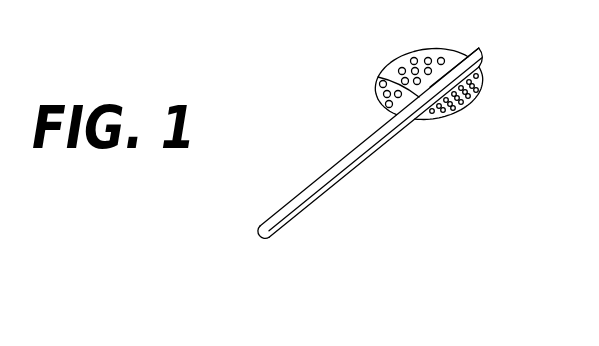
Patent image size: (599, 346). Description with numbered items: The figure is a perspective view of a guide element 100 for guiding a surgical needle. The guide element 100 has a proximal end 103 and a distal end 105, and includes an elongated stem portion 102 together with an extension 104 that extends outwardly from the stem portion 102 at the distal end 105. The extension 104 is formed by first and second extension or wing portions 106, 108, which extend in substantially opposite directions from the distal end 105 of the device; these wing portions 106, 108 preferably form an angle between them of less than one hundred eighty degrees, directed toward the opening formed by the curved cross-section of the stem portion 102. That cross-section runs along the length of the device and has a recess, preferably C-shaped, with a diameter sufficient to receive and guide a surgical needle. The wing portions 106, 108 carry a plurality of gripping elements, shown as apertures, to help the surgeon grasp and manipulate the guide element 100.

The guide element 100 is at (319, 123).
The stem portion 102 is at (295, 216).
The proximal end 103 is at (265, 238).
The extension 104 is at (442, 46).
The distal end 105 is at (479, 48).
The first extension portion 106 is at (400, 55).
The second extension portion 108 is at (462, 100).